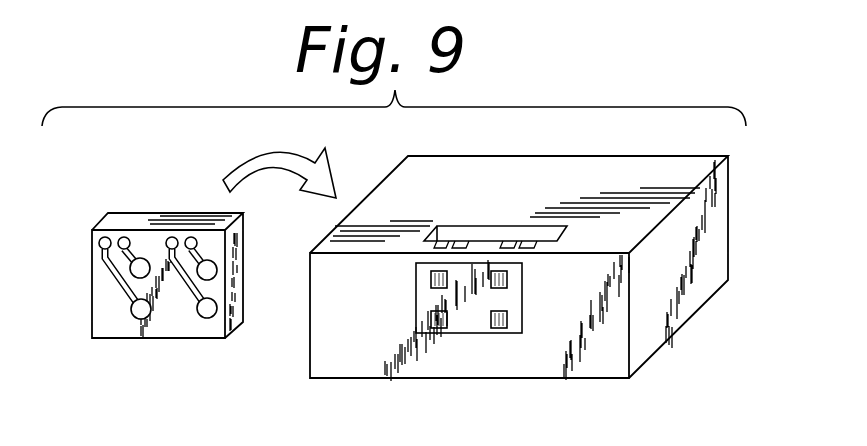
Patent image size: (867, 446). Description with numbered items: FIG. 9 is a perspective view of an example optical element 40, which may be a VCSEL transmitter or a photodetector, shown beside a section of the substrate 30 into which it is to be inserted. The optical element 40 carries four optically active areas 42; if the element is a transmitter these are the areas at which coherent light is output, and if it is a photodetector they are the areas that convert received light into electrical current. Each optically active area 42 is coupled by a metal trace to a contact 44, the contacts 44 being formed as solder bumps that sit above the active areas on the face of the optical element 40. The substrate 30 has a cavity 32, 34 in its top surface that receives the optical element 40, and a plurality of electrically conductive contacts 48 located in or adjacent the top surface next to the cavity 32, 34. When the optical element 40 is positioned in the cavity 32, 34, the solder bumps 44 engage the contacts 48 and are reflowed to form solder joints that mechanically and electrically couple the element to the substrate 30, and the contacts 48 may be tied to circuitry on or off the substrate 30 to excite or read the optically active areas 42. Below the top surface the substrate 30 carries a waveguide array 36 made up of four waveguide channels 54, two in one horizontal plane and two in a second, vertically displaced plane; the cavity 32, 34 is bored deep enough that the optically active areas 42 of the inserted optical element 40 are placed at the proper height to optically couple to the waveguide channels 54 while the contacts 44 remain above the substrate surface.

The substrate 30 is at (729, 230).
The cavity 32 is at (495, 206).
The cavity 34 is at (460, 232).
The waveguide array 36 is at (468, 334).
The optical element 40 is at (100, 222).
The optically active areas 42 is at (142, 262).
The contacts 44 is at (99, 243).
The electrically conductive contacts 48 is at (534, 242).
The waveguide channels 54 is at (431, 279).